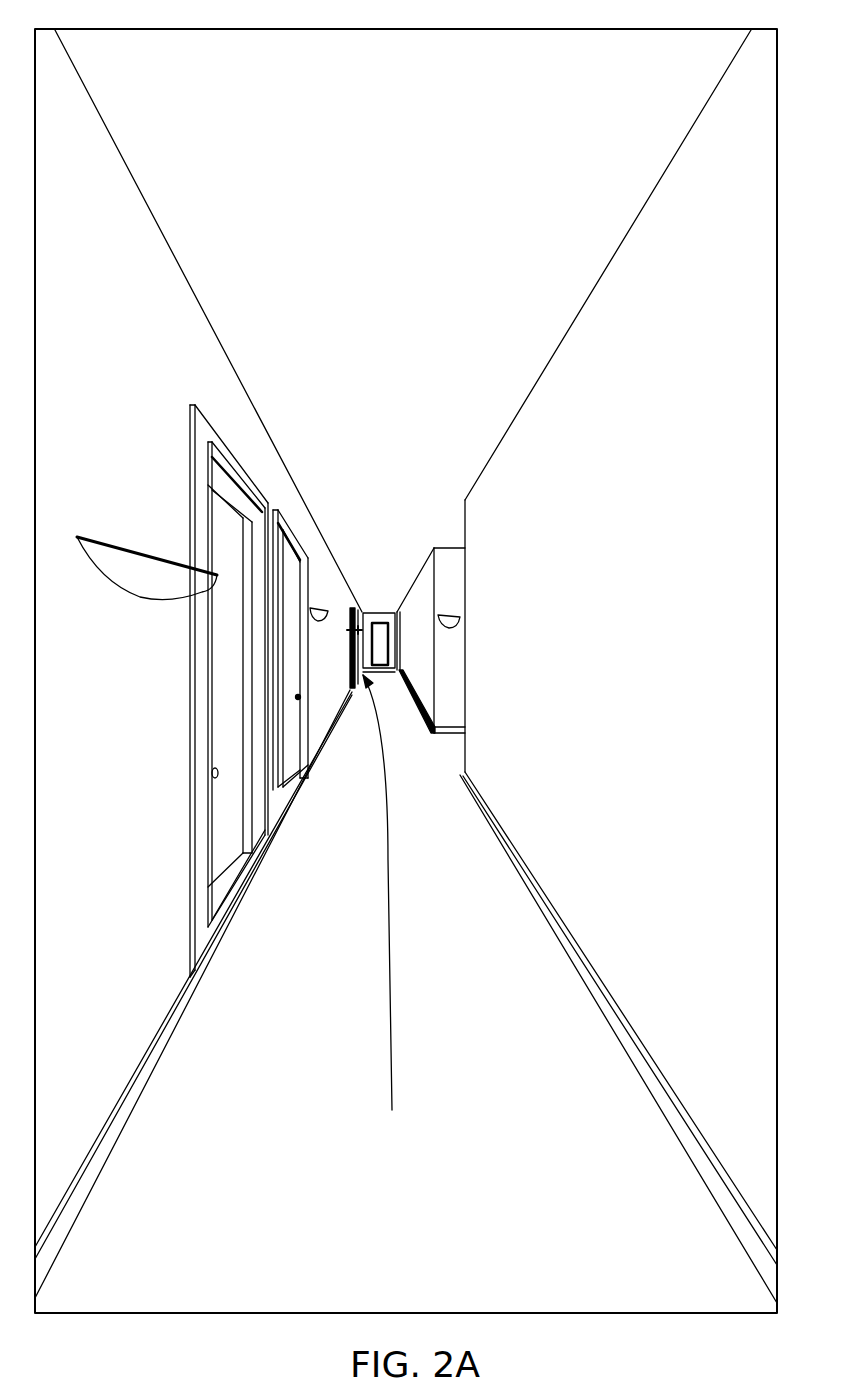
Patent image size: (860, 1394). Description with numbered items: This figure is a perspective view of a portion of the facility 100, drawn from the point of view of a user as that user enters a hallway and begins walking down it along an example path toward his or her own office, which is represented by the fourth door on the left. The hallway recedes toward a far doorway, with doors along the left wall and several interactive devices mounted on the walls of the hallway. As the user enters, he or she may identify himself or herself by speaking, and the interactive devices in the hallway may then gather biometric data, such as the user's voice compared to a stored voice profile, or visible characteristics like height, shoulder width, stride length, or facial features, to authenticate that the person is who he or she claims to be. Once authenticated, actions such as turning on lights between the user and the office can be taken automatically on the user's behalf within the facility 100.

The facility 100 is at (478, 27).